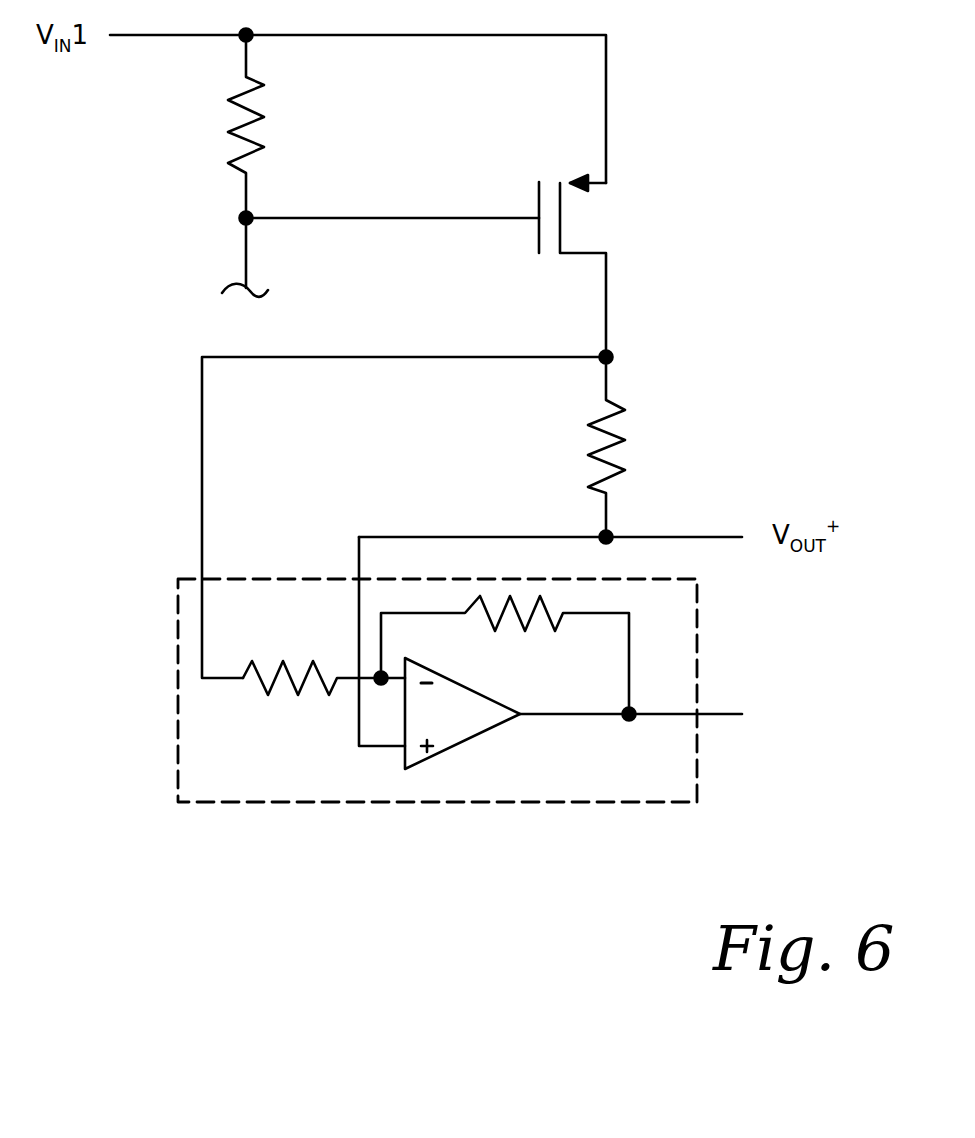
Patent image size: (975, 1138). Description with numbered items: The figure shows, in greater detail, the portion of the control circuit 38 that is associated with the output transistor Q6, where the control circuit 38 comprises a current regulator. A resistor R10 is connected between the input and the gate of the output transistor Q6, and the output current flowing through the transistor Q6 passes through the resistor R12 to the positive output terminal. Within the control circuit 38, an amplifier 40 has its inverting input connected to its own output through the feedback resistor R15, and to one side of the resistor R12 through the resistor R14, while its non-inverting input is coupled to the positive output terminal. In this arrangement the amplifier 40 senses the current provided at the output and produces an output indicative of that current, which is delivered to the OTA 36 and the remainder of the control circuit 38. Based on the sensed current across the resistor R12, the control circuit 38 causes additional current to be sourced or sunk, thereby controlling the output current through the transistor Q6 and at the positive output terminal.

The resistor R10 is at (208, 126).
The output transistor Q6 is at (446, 266).
The resistor R12 is at (643, 447).
The resistor R14 is at (324, 703).
The feedback resistor R15 is at (505, 655).
The amplifier 40 is at (470, 733).
The control circuit 38 is at (697, 758).
The operational transconductance amplifier (OTA) 36 is at (702, 696).